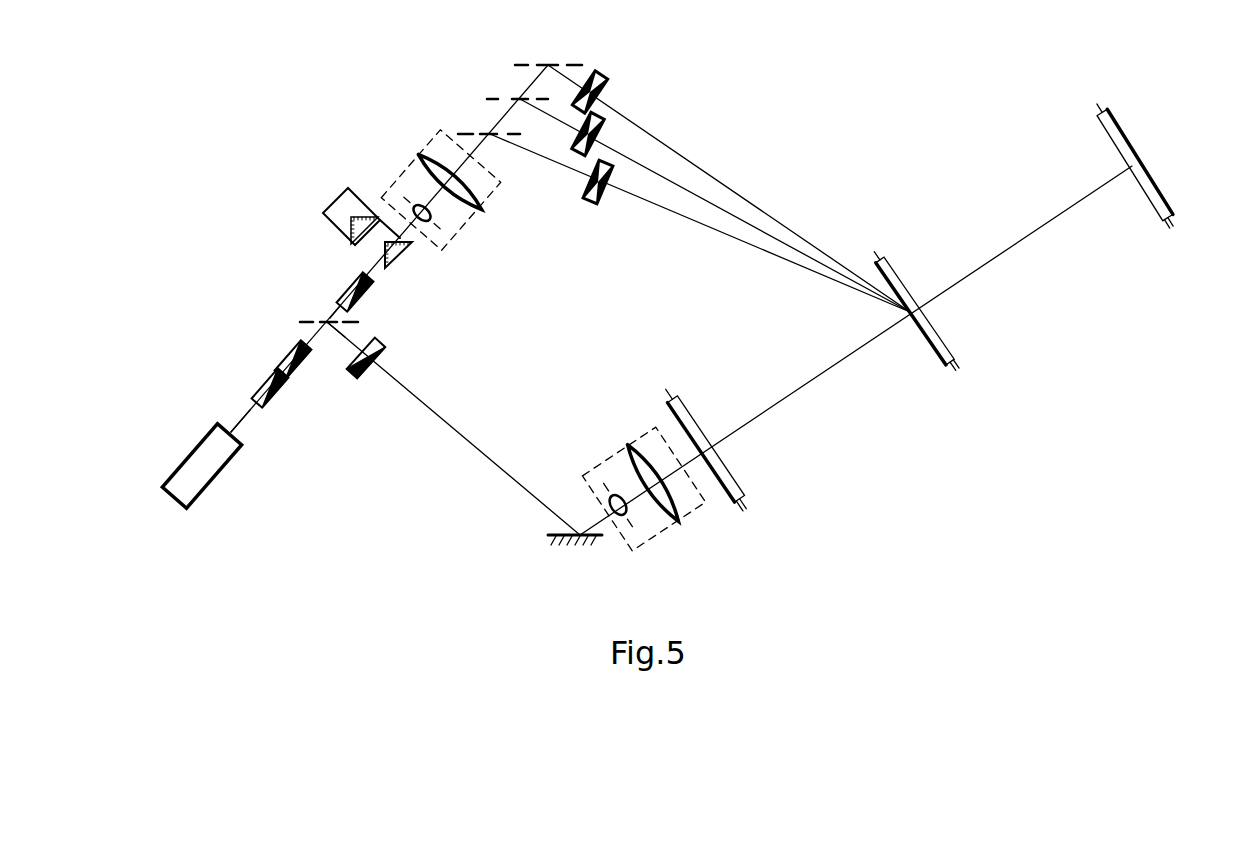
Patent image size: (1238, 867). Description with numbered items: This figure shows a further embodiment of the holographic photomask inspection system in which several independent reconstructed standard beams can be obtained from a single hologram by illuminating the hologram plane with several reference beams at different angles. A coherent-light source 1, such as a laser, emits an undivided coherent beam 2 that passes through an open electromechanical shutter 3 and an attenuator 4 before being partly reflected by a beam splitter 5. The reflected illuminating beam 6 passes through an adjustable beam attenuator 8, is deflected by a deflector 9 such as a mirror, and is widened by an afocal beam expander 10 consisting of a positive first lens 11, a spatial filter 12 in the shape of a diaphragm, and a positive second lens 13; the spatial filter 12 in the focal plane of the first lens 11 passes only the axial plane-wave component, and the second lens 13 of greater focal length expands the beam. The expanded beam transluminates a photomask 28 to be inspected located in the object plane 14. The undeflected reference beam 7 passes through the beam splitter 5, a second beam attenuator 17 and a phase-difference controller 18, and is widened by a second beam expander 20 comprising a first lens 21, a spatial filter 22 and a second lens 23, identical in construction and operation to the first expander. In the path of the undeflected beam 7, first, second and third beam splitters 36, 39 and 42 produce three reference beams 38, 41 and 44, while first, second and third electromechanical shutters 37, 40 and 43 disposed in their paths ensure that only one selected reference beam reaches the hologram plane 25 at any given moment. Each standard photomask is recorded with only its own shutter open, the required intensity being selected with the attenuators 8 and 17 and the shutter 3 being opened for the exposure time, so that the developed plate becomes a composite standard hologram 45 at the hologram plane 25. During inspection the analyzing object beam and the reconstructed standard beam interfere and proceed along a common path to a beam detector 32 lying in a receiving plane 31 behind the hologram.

The coherent-light source 1 is at (208, 478).
The undivided coherent beam 2 is at (235, 432).
The electromechanical shutter 3 is at (256, 378).
The attenuator 4 is at (280, 350).
The beam splitter 5 is at (312, 320).
The illuminating beam 6 is at (345, 340).
The reference beam 7 is at (336, 274).
The beam attenuator 8 is at (364, 376).
The deflector 9 is at (552, 540).
The beam expander 10 is at (703, 502).
The first lens 11 is at (610, 498).
The spatial filter 12 is at (636, 516).
The second lens 13 is at (631, 450).
The object plane 14 is at (746, 506).
The beam attenuator 17 is at (343, 276).
The phase-difference controller 18 is at (392, 262).
The second beam expander 20 is at (497, 187).
The first lens 21 is at (382, 200).
The spatial filter 22 is at (417, 203).
The second lens 23 is at (468, 196).
The hologram plane 25 is at (882, 262).
The photomask 28 is at (690, 402).
The receiving plane 31 is at (1106, 114).
The beam detector 32 is at (1172, 222).
The first beam splitter 36 is at (470, 132).
The first electromechanical shutter 37 is at (598, 204).
The first reference beam 38 is at (700, 226).
The second beam splitter 39 is at (500, 99).
The second electromechanical shutter 40 is at (600, 126).
The second reference beam 41 is at (766, 233).
The third beam splitter 42 is at (528, 65).
The third electromechanical shutter 43 is at (590, 74).
The third reference beam 44 is at (722, 178).
The composite standard hologram 45 is at (950, 352).